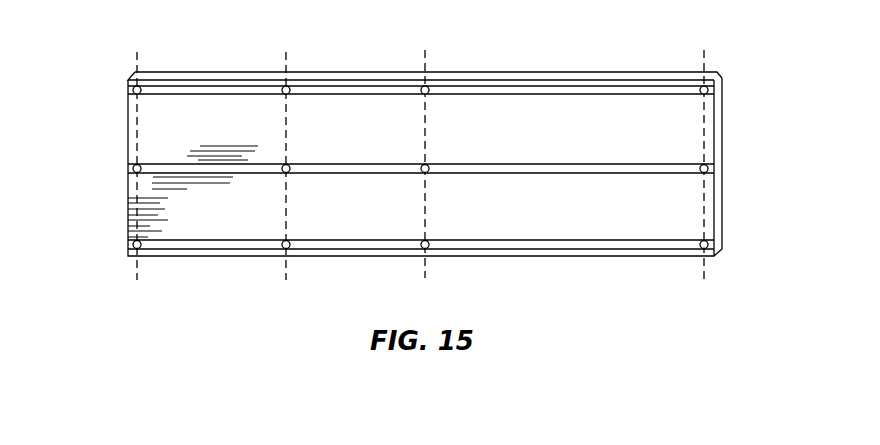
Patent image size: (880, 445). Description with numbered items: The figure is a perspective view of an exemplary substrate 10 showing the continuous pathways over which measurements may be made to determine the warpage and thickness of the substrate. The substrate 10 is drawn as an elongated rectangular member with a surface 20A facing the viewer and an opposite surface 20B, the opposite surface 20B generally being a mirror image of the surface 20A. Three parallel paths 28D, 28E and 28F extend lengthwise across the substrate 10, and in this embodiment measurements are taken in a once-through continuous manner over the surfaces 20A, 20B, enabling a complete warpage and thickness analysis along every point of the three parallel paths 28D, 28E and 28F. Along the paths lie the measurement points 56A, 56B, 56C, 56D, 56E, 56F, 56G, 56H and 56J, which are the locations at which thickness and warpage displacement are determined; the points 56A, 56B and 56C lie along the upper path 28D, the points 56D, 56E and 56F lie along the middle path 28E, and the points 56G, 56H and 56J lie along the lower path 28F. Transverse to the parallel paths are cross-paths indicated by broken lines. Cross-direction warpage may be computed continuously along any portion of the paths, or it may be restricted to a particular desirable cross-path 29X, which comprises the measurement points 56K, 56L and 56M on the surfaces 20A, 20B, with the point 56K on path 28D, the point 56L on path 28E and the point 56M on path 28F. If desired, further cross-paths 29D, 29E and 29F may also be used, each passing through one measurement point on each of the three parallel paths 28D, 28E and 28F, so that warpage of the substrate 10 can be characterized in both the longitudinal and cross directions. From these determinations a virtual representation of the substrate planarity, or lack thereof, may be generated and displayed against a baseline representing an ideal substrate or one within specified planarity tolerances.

The substrate 10 is at (336, 143).
The surface 20A is at (225, 228).
The opposite surface 20B is at (150, 71).
The parallel path 28D is at (585, 92).
The parallel path 28E is at (573, 164).
The parallel path 28F is at (573, 240).
The cross-path 29D is at (703, 127).
The cross-path 29E is at (424, 208).
The cross-path 29F is at (132, 272).
The cross-path 29X is at (285, 52).
The measurement point 56A is at (706, 90).
The measurement point 56B is at (428, 87).
The measurement point 56C is at (136, 90).
The measurement point 56D is at (706, 168).
The measurement point 56E is at (428, 167).
The measurement point 56F is at (136, 168).
The measurement point 56G is at (706, 244).
The measurement point 56H is at (428, 243).
The measurement point 56J is at (136, 245).
The measurement point 56K is at (283, 93).
The measurement point 56L is at (282, 172).
The measurement point 56M is at (286, 248).